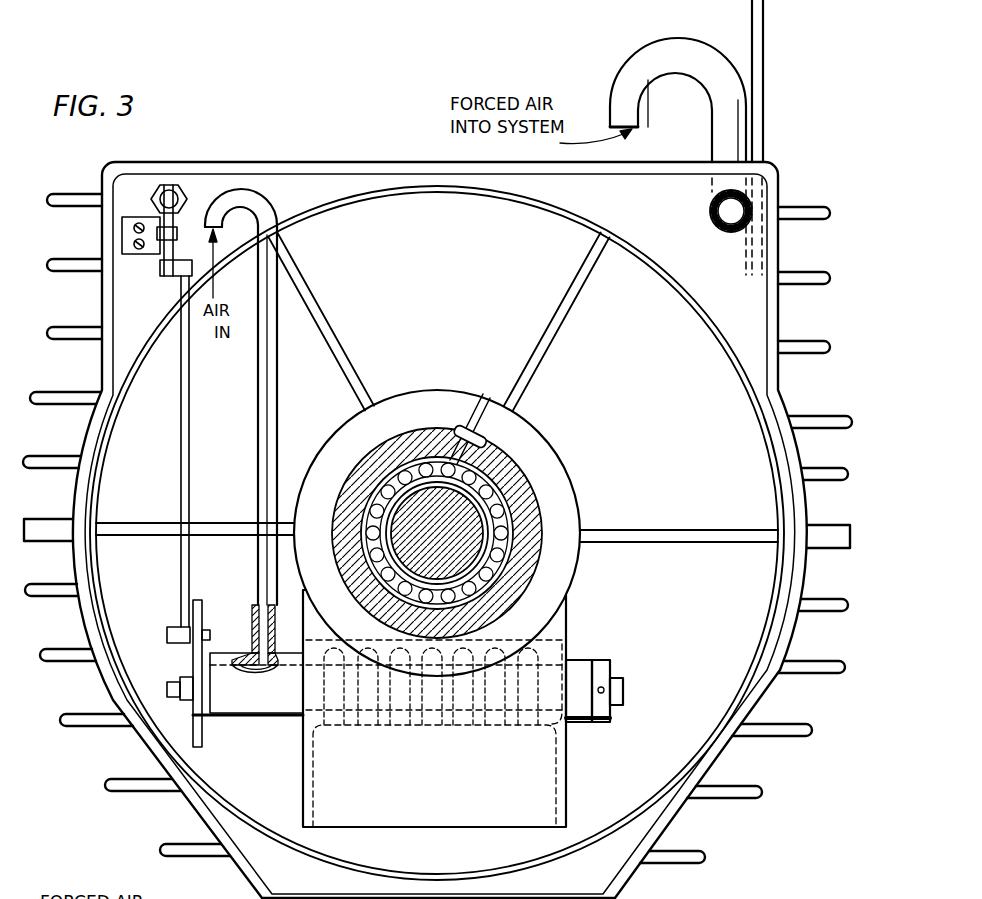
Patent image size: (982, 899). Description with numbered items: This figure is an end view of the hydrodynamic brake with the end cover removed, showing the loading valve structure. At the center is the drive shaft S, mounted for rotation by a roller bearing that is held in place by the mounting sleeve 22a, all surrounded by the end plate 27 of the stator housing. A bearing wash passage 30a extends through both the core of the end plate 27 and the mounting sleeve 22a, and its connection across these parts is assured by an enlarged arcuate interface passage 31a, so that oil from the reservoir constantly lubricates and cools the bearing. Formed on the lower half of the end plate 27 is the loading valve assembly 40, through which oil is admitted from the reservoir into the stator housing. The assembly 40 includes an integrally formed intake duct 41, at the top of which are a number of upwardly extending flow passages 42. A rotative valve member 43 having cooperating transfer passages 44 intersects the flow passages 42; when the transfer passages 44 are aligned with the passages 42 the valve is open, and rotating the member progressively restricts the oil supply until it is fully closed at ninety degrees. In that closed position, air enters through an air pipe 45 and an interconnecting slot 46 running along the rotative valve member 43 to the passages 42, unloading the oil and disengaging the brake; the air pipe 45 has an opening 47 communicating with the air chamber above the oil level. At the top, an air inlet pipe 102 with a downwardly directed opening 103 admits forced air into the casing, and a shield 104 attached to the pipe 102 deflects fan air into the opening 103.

The mounting sleeve 22a is at (524, 489).
The end plate 27 is at (528, 434).
The bearing wash channel 30a is at (462, 404).
The arcuate interface passage 31a is at (456, 432).
The loading valve assembly 40 is at (586, 638).
The intake duct 41 is at (535, 773).
The flow passages 42 is at (362, 662).
The rotative valve member 43 is at (242, 660).
The transfer passages 44 is at (378, 732).
The air pipe 45 is at (256, 462).
The interconnecting slot 46 is at (257, 675).
The opening 47 is at (218, 234).
The air inlet pipe 102 is at (630, 66).
The downwardly directed opening 103 is at (641, 128).
The shield 104 is at (763, 17).
The drive shaft S is at (468, 513).